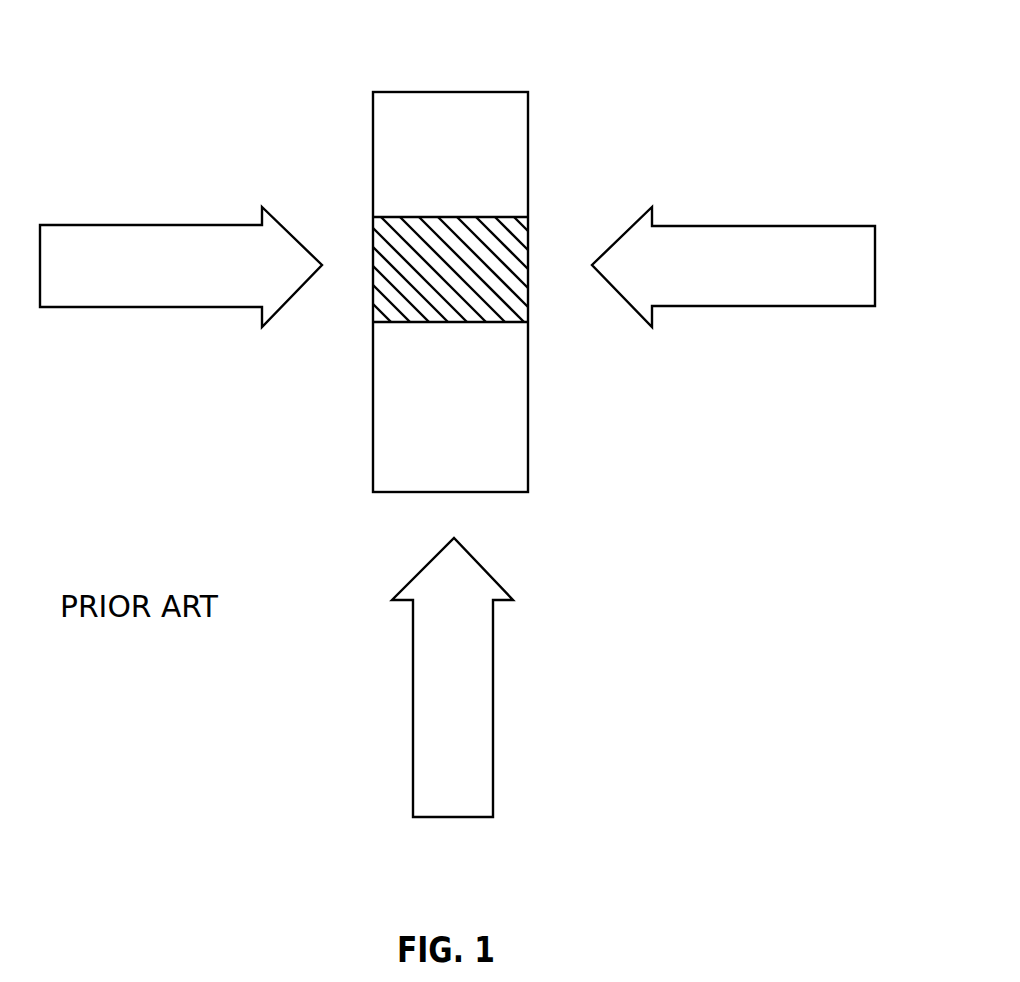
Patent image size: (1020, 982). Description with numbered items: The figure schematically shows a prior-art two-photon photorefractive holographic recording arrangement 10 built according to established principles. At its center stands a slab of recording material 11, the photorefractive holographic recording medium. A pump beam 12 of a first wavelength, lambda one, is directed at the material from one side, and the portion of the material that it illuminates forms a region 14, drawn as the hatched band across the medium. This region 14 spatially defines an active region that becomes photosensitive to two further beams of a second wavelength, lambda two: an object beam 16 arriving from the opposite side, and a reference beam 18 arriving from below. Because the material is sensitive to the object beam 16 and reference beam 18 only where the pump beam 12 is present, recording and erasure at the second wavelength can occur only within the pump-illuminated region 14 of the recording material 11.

The two-photon recording arrangement 10 is at (258, 122).
The recording material 11 is at (540, 137).
The pump beam 12 is at (760, 282).
The region 14 is at (504, 280).
The object beam 16 is at (207, 273).
The reference beam 18 is at (470, 579).